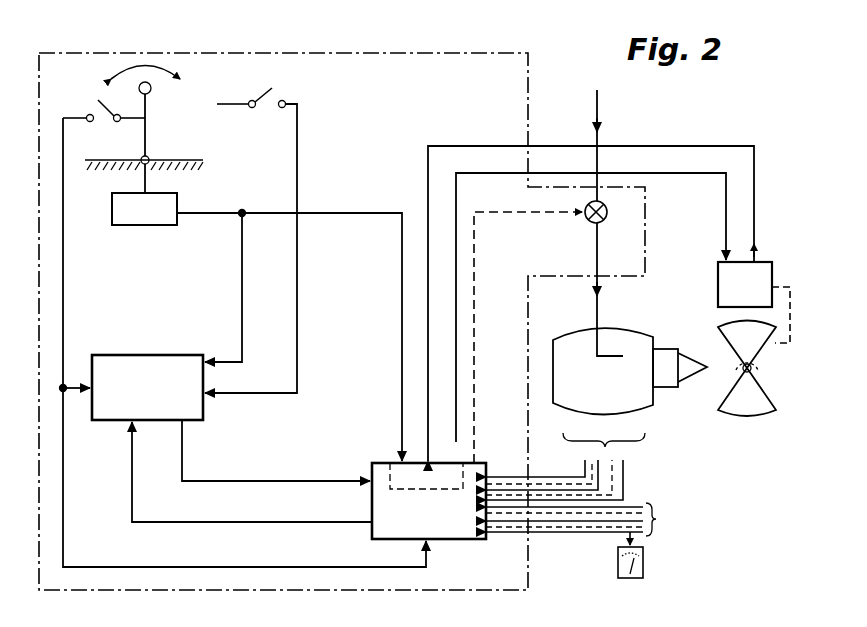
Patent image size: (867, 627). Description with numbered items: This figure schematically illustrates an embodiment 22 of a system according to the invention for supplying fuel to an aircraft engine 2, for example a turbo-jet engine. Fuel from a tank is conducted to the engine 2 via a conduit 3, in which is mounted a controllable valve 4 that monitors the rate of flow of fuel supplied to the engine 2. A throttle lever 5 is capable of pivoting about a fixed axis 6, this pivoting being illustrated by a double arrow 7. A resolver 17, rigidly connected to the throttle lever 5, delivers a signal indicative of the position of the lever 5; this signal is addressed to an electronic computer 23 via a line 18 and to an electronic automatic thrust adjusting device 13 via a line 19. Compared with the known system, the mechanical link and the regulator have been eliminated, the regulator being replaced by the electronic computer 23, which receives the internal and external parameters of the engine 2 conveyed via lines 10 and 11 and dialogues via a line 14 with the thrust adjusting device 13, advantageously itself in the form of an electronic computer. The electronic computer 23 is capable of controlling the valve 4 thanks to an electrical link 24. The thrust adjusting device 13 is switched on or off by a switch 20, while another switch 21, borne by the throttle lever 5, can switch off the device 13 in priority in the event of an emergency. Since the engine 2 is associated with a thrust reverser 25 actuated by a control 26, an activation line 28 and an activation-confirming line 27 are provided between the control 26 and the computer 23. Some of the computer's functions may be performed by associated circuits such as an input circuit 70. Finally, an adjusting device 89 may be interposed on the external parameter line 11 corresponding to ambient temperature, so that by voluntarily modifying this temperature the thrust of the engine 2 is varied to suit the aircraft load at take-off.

The engine 2 is at (637, 348).
The conduit 3 is at (600, 110).
The controllable valve 4 is at (606, 221).
The throttle lever 5 is at (152, 108).
The fixed axis 6 is at (149, 156).
The double arrow 7 is at (113, 71).
The internal parameter line 10 is at (552, 486).
The external parameter line 11 is at (608, 535).
The electronic automatic thrust adjusting device 13 is at (150, 365).
The line 14 is at (261, 521).
The resolver 17 is at (147, 227).
The line 18 is at (402, 310).
The line 19 is at (242, 292).
The switch 20 is at (266, 91).
The switch 21 is at (97, 99).
The schematic embodiment 22 is at (510, 80).
The electronic computer 23 is at (454, 532).
The electrical link 24 is at (474, 352).
The thrust reverser 25 is at (762, 413).
The control 26 is at (765, 277).
The activation-confirming line 27 is at (707, 146).
The activation line 28 is at (697, 177).
The input circuit 70 is at (392, 458).
The adjusting device 89 is at (646, 565).